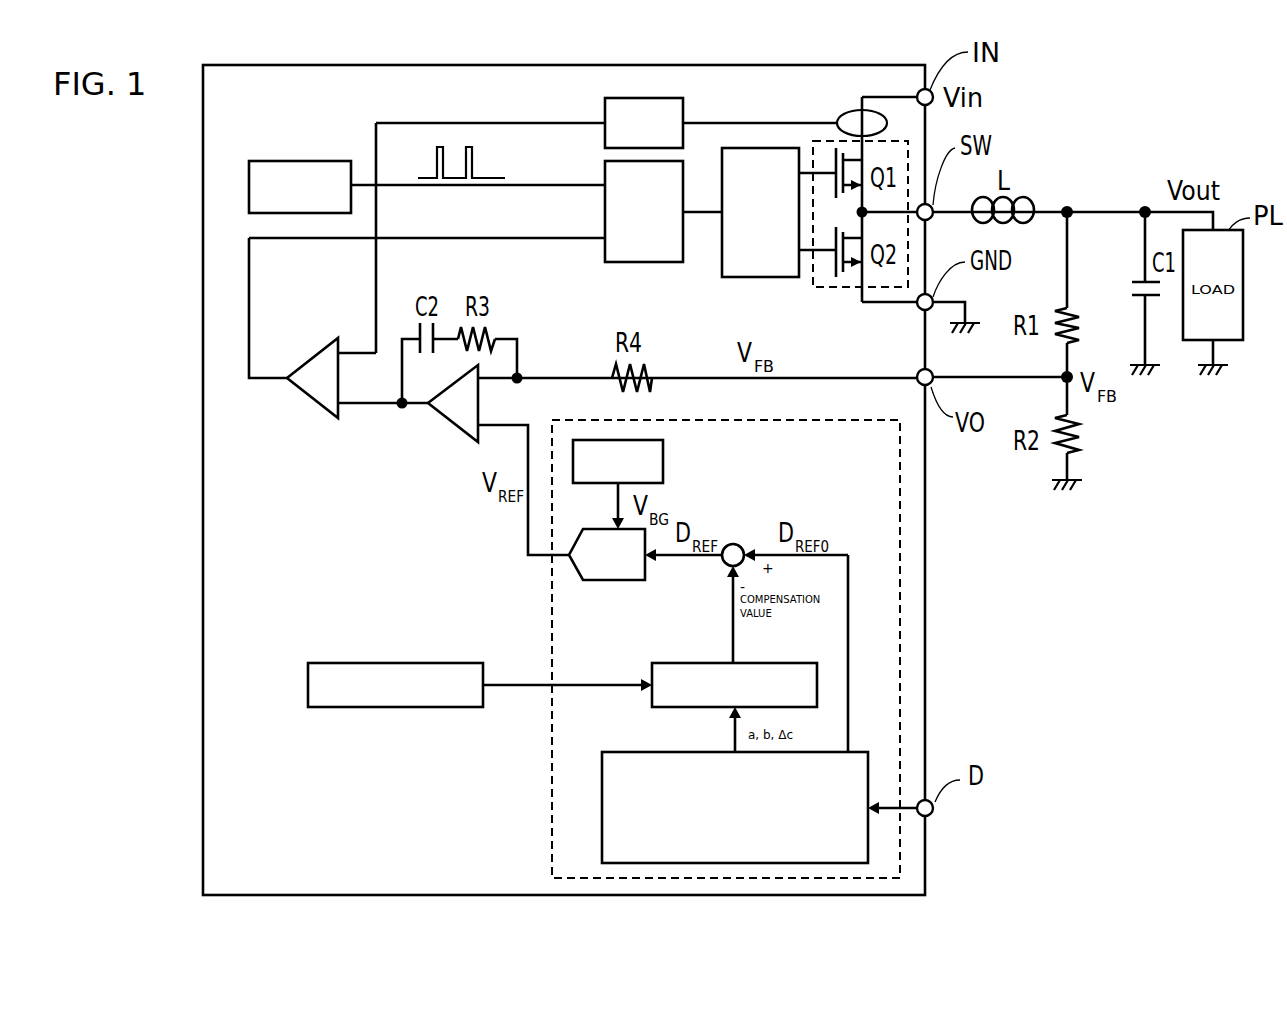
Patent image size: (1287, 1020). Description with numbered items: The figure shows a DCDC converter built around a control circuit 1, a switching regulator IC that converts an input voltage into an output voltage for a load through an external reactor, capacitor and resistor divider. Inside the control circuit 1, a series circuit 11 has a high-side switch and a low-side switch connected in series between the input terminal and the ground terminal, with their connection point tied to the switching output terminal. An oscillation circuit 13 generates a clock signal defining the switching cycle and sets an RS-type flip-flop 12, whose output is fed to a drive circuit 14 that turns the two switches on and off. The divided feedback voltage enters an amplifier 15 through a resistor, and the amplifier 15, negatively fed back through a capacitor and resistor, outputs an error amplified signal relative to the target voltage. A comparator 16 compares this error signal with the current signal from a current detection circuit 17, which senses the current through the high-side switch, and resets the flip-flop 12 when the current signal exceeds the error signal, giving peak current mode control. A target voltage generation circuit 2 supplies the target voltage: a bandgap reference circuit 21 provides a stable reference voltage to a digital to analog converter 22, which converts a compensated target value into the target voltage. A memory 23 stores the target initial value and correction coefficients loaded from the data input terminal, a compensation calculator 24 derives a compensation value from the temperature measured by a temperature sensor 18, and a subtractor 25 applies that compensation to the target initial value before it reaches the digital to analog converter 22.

The control circuit 1 is at (740, 65).
The target voltage generation circuit 2 is at (782, 422).
The series circuit 11 is at (825, 287).
The flip-flop 12 is at (643, 262).
The oscillation circuit 13 is at (292, 161).
The drive circuit 14 is at (749, 277).
The amplifier 15 is at (445, 422).
The comparator 16 is at (310, 398).
The current detection circuit 17 is at (677, 98).
The temperature sensor 18 is at (447, 663).
The bandgap reference circuit 21 is at (663, 460).
The digital to analog converter 22 is at (605, 578).
The memory 23 is at (650, 752).
The compensation calculator 24 is at (775, 663).
The subtractor 25 is at (740, 545).